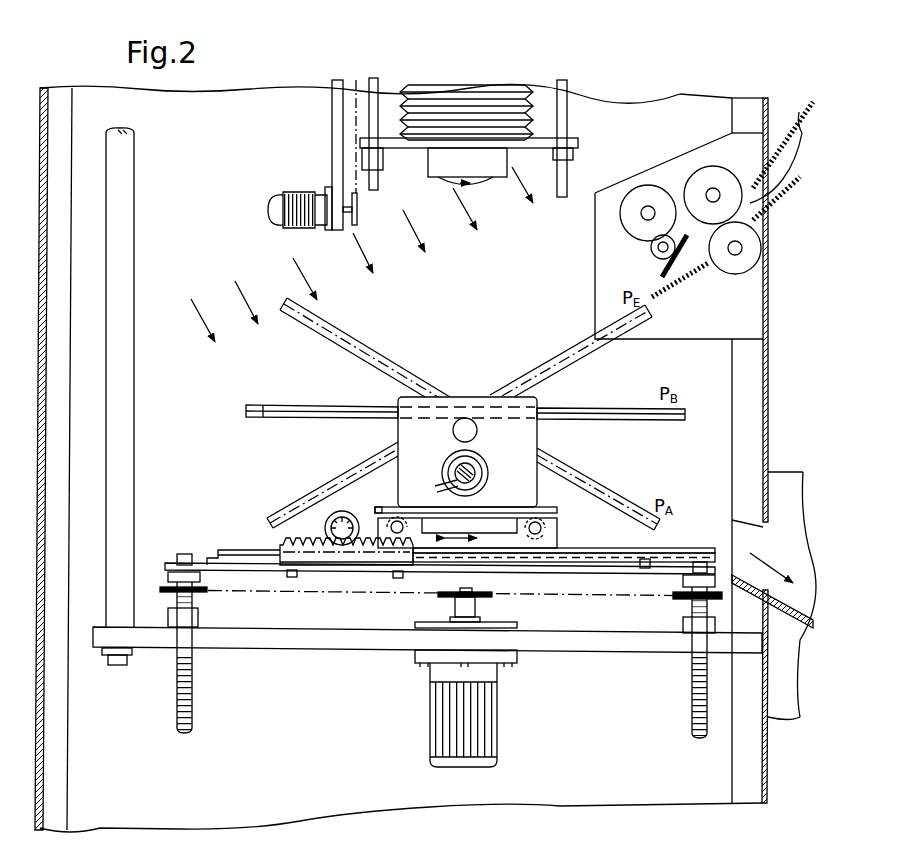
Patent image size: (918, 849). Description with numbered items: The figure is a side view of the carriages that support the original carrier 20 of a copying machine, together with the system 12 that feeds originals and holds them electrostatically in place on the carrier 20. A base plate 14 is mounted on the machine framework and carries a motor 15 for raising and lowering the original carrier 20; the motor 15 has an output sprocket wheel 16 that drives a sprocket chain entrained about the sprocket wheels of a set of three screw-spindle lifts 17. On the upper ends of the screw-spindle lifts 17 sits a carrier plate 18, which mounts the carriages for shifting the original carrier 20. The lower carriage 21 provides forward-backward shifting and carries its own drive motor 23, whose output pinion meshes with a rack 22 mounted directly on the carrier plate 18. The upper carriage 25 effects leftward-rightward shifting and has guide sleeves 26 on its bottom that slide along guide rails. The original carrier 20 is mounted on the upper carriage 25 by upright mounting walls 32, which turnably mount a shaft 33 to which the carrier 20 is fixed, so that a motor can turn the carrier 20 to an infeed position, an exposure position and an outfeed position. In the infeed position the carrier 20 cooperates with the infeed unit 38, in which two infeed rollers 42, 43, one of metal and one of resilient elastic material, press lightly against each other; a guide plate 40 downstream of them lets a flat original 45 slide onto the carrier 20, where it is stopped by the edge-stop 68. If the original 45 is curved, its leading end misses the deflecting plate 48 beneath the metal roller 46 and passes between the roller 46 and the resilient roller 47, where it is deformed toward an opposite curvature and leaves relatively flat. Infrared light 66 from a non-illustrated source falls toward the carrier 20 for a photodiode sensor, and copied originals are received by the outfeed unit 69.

The original feeding and holding system 12 is at (442, 366).
The base plate 14 is at (143, 642).
The motor 15 is at (494, 741).
The output sprocket wheel 16 is at (493, 597).
The screw-spindle lifts 17 is at (190, 703).
The carrier plate 18 is at (668, 564).
The original carrier 20 is at (256, 406).
The lower carriage 21 is at (553, 543).
The rack 22 is at (327, 568).
The drive motor 23 is at (338, 513).
The upper carriage 25 is at (543, 508).
The guide sleeves 26 is at (377, 507).
The upright mounting walls 32 is at (528, 438).
The shaft 33 is at (466, 418).
The infeed unit 38 is at (745, 329).
The guide plate 40 is at (680, 287).
The infeed roller 42 is at (762, 250).
The infeed roller 43 is at (722, 171).
The original 45 is at (790, 141).
The roller 46 is at (653, 255).
The roller 47 is at (632, 215).
The deflecting plate 48 is at (660, 271).
The infrared light 66 is at (358, 237).
The edge-stop 68 is at (268, 405).
The outfeed unit 69 is at (786, 613).